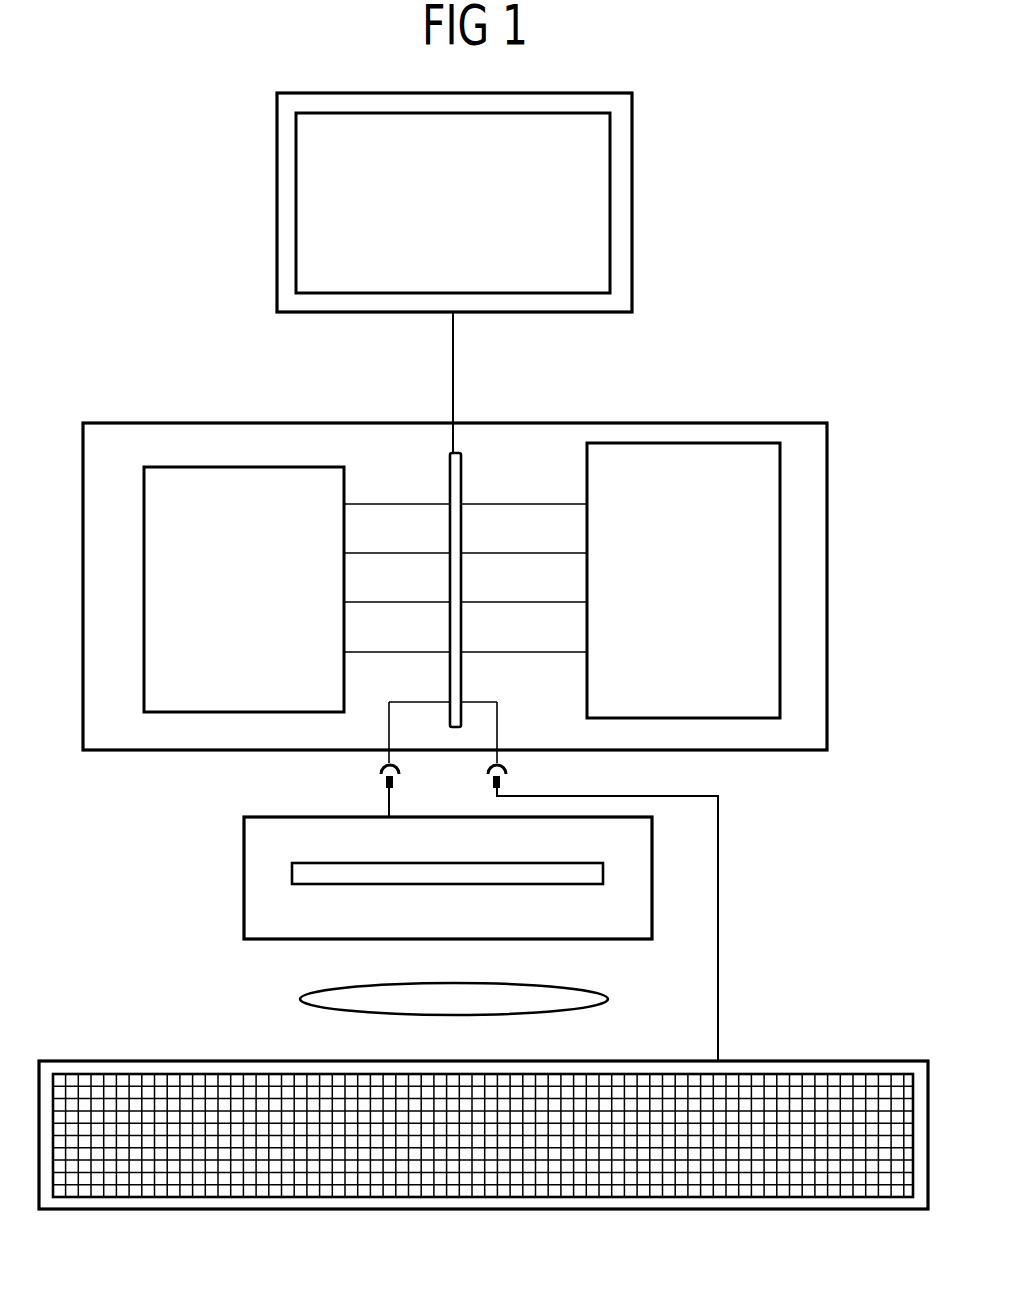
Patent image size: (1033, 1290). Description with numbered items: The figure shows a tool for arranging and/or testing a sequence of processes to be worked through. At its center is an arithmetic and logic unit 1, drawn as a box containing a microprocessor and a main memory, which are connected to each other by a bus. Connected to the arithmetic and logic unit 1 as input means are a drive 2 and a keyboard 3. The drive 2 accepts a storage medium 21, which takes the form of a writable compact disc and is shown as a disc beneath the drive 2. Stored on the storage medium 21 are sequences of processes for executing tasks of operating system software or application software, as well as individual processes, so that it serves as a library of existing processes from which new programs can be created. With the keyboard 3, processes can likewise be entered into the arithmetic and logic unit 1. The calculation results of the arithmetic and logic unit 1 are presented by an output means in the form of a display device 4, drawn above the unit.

The arithmetic and logic unit 1 is at (685, 423).
The drive 2 is at (653, 876).
The storage medium 21 is at (608, 999).
The keyboard 3 is at (813, 1061).
The display device 4 is at (633, 210).